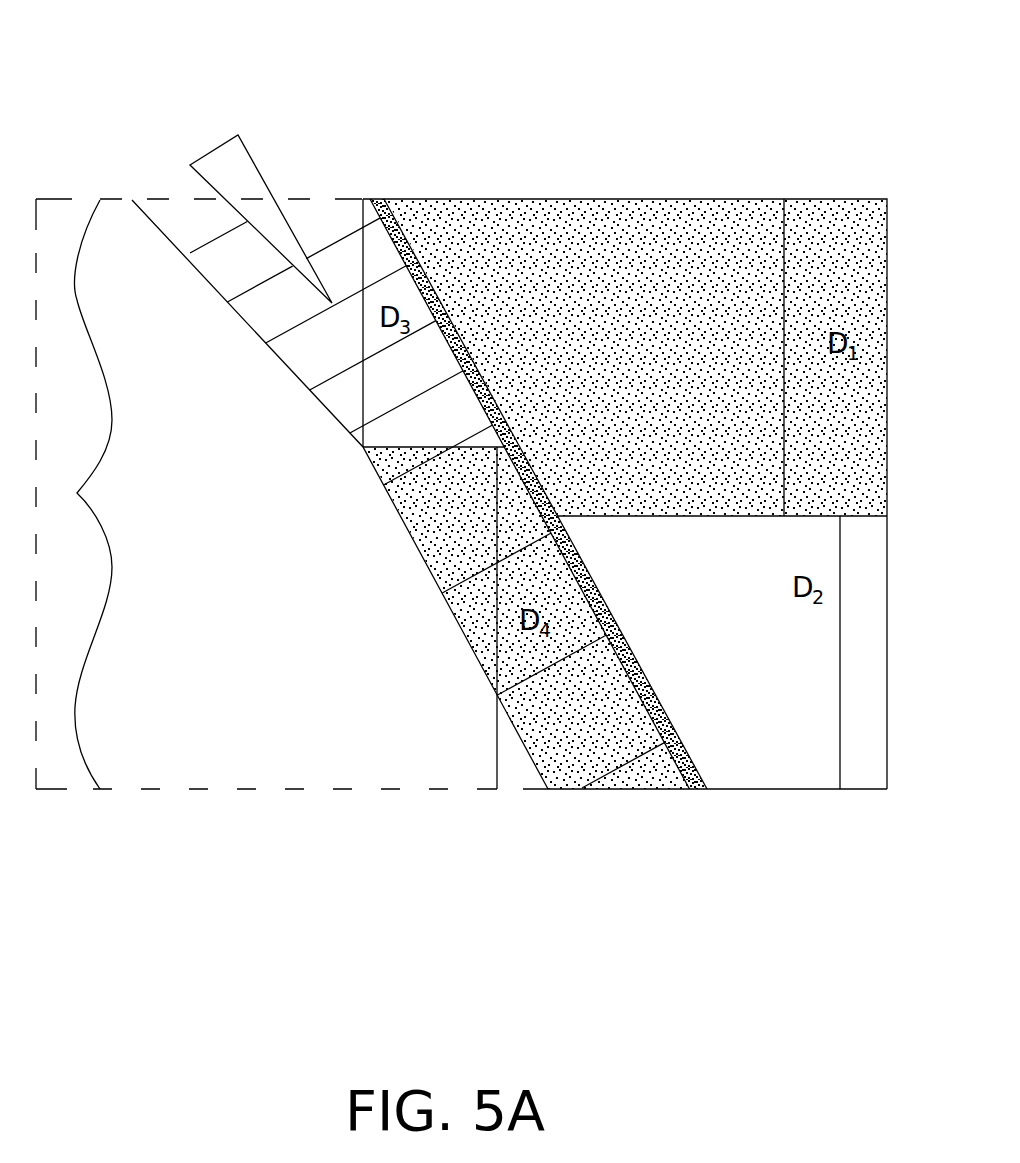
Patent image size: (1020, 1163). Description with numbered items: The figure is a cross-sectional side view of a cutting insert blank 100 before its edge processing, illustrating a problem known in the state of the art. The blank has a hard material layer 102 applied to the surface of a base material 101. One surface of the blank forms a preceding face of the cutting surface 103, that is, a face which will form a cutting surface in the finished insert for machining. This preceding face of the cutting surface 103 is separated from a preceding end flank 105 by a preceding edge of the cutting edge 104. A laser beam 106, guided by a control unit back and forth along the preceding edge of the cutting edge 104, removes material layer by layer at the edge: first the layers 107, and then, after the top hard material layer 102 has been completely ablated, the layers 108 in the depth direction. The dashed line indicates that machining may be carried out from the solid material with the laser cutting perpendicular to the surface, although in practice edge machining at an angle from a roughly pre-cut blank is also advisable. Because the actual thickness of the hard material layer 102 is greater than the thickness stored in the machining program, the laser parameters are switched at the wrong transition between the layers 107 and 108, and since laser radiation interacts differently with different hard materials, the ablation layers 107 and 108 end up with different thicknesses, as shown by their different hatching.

The cutting insert blank 100 is at (492, 150).
The base material 101 is at (764, 662).
The hard material layer 102 is at (706, 352).
The preceding face of the cutting surface 103 is at (550, 199).
The preceding edge of the cutting edge 104 is at (145, 200).
The preceding end flank 105 is at (266, 494).
The laser beam 106 is at (260, 174).
The layers 107 is at (169, 240).
The layers 108 is at (374, 468).